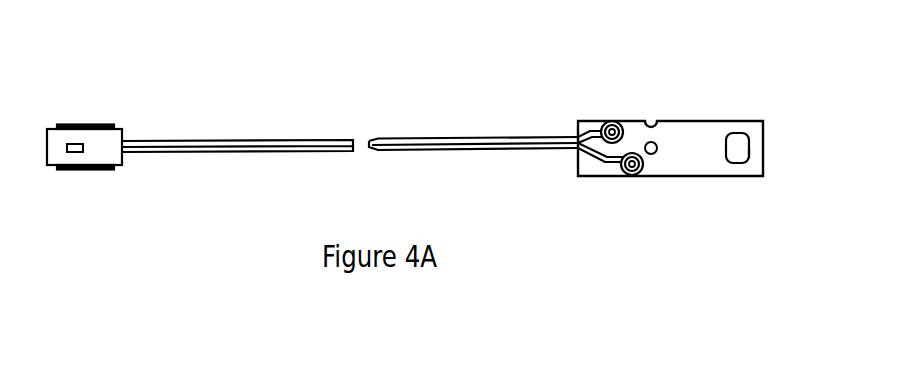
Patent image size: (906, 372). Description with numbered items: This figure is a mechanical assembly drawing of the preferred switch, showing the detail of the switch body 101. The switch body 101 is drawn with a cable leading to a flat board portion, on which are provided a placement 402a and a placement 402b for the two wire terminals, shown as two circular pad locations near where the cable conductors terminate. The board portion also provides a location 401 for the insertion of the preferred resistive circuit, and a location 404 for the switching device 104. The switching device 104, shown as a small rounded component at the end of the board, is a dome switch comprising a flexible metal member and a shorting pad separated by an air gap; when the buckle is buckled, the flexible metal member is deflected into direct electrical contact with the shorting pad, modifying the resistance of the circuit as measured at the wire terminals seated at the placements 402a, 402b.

The switch body 101 is at (573, 121).
The placement for insertion of the resistive circuit 401 is at (697, 120).
The placement for wire terminal 402a is at (611, 121).
The placement for wire terminal 402b is at (632, 177).
The switching device 104 is at (738, 133).
The placement for the switching device 404 is at (750, 157).